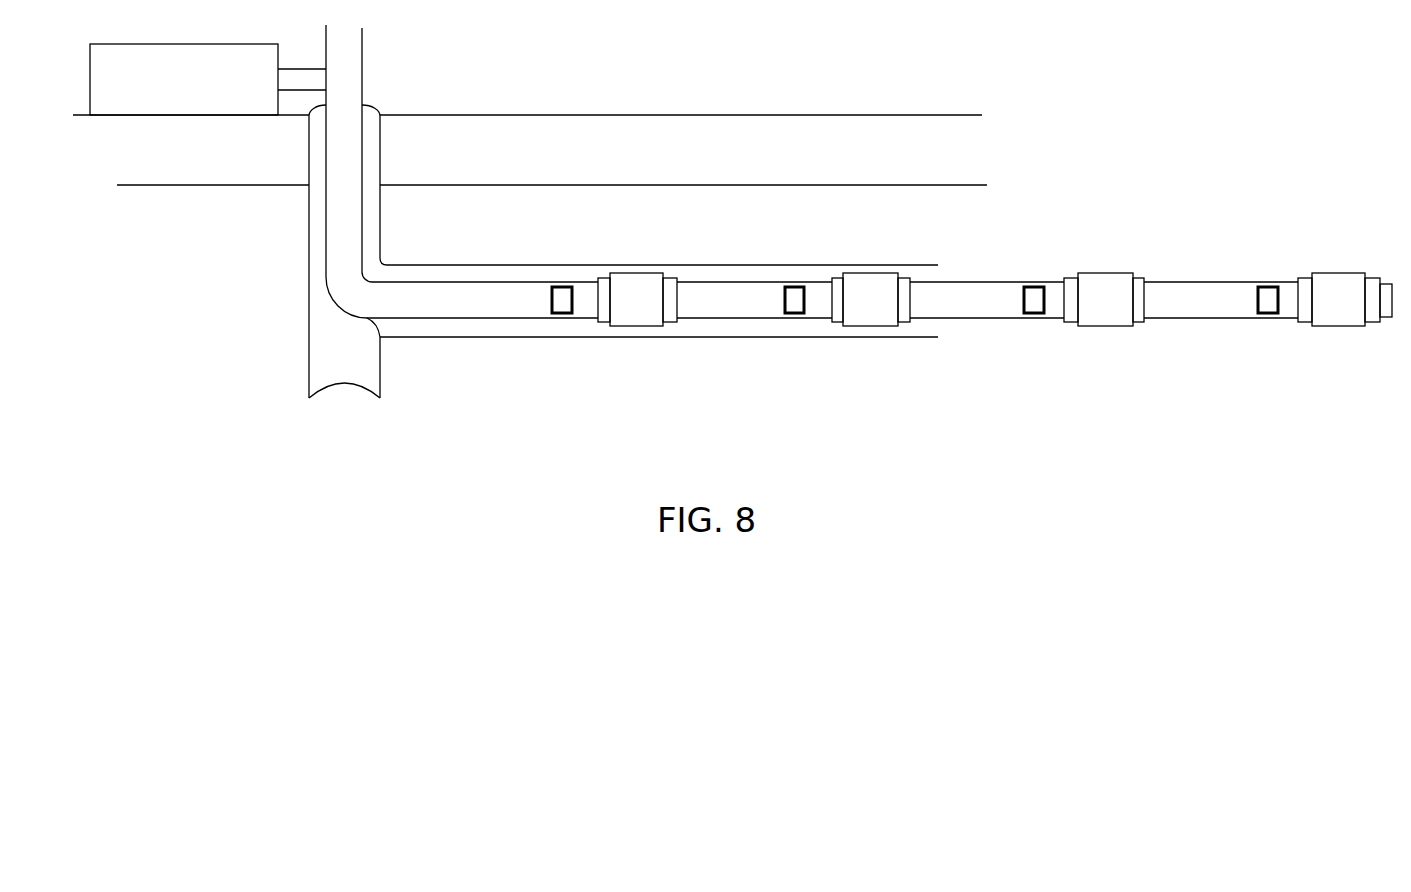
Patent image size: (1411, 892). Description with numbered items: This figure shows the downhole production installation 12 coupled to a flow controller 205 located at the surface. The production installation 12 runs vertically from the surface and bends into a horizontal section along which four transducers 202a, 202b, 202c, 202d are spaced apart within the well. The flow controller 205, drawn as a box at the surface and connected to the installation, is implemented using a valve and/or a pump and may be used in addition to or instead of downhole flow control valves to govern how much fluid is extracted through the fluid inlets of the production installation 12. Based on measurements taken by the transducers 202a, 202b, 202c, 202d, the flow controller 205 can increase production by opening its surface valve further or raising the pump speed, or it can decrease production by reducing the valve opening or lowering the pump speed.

The flow controller 205 is at (189, 43).
The production installation 12 is at (289, 240).
The transducer 202a is at (560, 297).
The transducer 202b is at (797, 297).
The transducer 202c is at (1036, 296).
The transducer 202d is at (1270, 296).